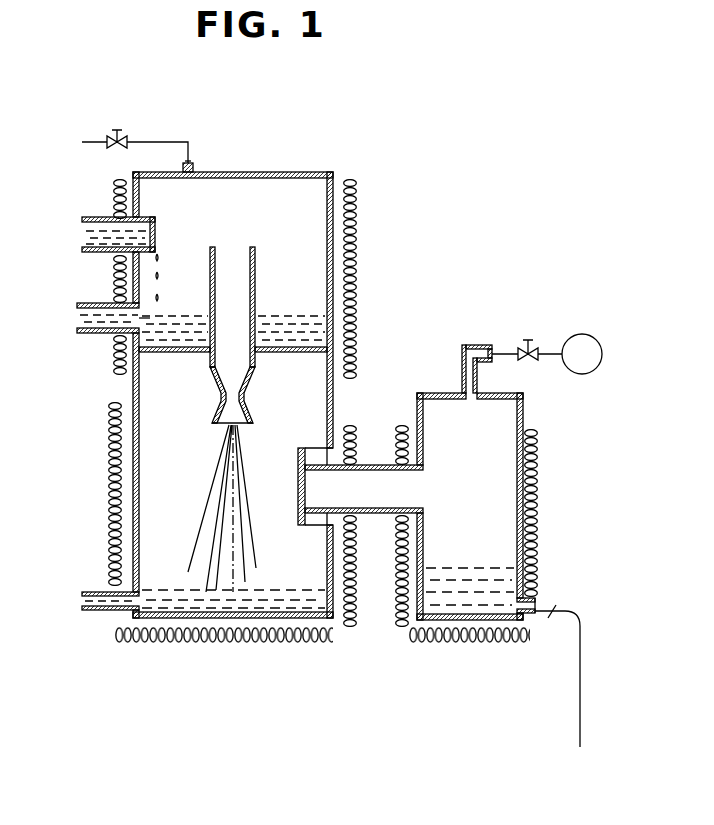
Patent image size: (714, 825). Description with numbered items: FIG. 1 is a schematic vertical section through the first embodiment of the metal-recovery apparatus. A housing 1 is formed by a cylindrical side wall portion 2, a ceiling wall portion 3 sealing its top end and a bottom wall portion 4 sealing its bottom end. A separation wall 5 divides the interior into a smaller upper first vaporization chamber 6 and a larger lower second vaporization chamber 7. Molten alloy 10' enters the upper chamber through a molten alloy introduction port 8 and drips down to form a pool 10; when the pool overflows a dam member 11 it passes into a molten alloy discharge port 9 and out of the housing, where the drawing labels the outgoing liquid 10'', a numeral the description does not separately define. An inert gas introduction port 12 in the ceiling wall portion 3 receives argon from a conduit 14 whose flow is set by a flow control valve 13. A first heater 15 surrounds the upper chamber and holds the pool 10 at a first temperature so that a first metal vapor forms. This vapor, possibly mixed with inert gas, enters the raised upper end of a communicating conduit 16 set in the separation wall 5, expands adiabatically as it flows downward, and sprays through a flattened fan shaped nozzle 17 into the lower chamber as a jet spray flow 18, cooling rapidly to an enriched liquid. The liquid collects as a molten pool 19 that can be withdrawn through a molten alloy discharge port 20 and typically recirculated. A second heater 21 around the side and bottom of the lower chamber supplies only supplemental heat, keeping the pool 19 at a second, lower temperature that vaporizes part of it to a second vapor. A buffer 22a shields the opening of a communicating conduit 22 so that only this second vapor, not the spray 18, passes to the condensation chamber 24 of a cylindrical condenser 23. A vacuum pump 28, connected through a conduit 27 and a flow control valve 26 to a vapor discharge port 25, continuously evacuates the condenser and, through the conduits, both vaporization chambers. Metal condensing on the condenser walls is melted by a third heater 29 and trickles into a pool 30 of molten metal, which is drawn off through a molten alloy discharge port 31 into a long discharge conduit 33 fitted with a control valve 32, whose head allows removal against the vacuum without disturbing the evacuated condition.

The housing 1 is at (259, 395).
The cylindrical side wall portion 2 is at (330, 240).
The ceiling wall portion 3 is at (312, 172).
The bottom wall portion 4 is at (265, 618).
The separation wall 5 is at (233, 333).
The first vaporization chamber 6 is at (253, 208).
The second vaporization chamber 7 is at (160, 394).
The molten alloy introduction port 8 is at (89, 239).
The molten alloy discharge port 9 is at (78, 298).
The pool of molten alloy 10 is at (233, 311).
The molten alloy 10' is at (84, 222).
The second liquid 10'' is at (78, 306).
The dam member 11 is at (140, 320).
The inert gas introduction port 12 is at (194, 164).
The flow control valve 13 is at (117, 130).
The conduit 14 is at (157, 142).
The first heater 15 is at (352, 273).
The communicating conduit 16 is at (248, 323).
The fan shaped nozzle 17 is at (244, 401).
The jet spray flow 18 is at (220, 463).
The molten pool 19 is at (165, 600).
The molten alloy discharge port 20 is at (85, 600).
The second heater 21 is at (115, 517).
The communicating conduit 22 is at (341, 490).
The buffer 22a is at (302, 518).
The cylindrical condenser 23 is at (483, 529).
The condensation chamber 24 is at (485, 487).
The vapor discharge port 25 is at (462, 373).
The flow control valve 26 is at (528, 340).
The conduit 27 is at (494, 354).
The vacuum pump 28 is at (584, 334).
The third heater 29 is at (425, 645).
The pool of molten metal 30 is at (455, 568).
The molten alloy discharge port 31 is at (537, 618).
The control valve 32 is at (552, 611).
The discharge conduit 33 is at (557, 658).